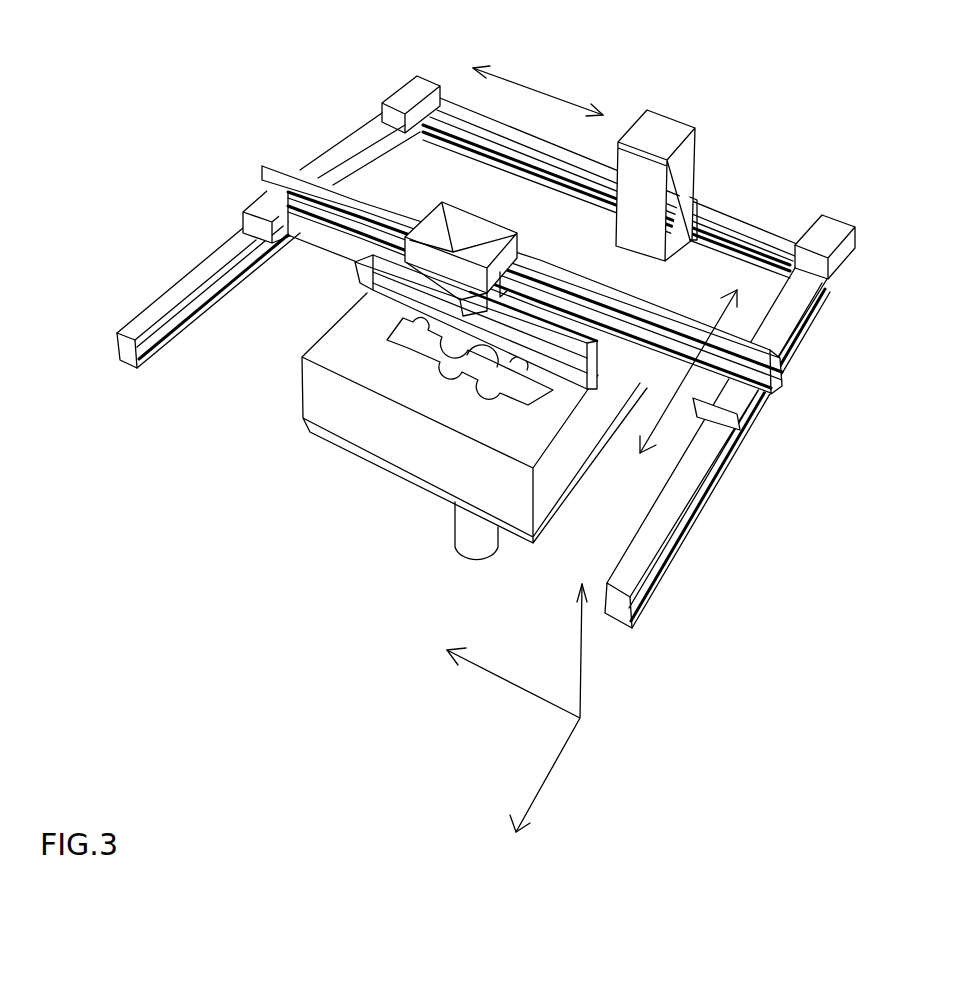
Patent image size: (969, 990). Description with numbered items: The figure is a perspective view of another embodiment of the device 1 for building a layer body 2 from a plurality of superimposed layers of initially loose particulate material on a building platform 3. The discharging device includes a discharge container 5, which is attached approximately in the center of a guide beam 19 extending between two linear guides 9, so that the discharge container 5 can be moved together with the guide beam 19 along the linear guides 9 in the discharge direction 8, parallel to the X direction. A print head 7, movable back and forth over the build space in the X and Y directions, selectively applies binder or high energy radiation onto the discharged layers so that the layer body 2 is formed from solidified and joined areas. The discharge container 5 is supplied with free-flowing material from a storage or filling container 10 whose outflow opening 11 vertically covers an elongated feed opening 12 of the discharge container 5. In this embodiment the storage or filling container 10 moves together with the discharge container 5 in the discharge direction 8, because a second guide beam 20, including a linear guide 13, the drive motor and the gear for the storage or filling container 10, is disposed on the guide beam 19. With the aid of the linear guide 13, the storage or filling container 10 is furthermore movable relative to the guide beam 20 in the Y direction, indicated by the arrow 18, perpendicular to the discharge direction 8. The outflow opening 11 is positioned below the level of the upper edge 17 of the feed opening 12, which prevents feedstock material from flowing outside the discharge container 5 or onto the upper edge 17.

The device 1 is at (263, 63).
The layer body 2 is at (530, 385).
The building platform 3 is at (352, 441).
The discharge container 5 is at (373, 285).
The print head 7 is at (684, 167).
The discharge direction 8 is at (720, 312).
The linear guides 9 is at (242, 192).
The storage or filling container 10 is at (467, 216).
The outflow opening 11 is at (478, 313).
The feed opening 12 is at (515, 323).
The linear guide 13 is at (502, 300).
The upper edge 17 is at (567, 327).
The arrow 18 is at (537, 92).
The guide beam 19 is at (312, 238).
The guide beam 20 is at (627, 305).